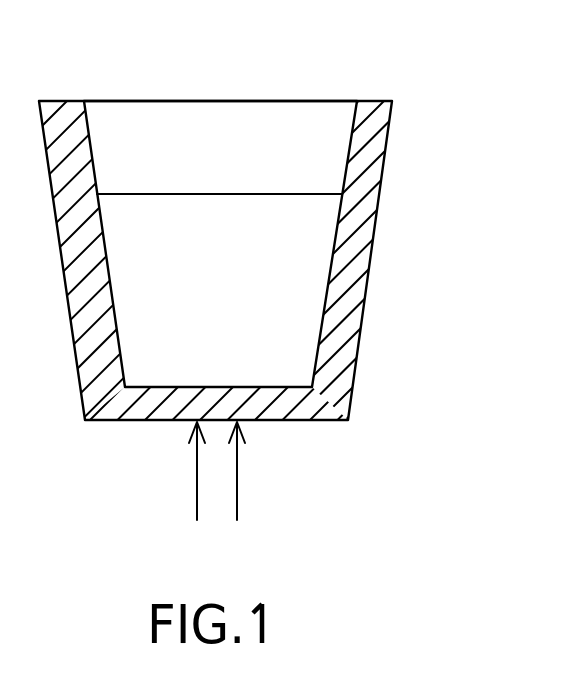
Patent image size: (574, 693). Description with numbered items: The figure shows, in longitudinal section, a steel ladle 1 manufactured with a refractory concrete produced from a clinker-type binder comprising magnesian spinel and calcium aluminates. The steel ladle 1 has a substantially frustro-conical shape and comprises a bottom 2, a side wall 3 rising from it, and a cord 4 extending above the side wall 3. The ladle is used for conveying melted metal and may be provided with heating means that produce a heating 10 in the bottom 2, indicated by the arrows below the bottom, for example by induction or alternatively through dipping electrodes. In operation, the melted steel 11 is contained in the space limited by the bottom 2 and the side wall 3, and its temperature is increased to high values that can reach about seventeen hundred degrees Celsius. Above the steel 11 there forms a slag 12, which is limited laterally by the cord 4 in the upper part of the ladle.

The steel ladle 1 is at (287, 258).
The bottom 2 is at (287, 301).
The side wall 3 is at (287, 301).
The cord 4 is at (420, 96).
The heating 10 is at (237, 470).
The steel 11 is at (290, 243).
The slag 12 is at (197, 137).